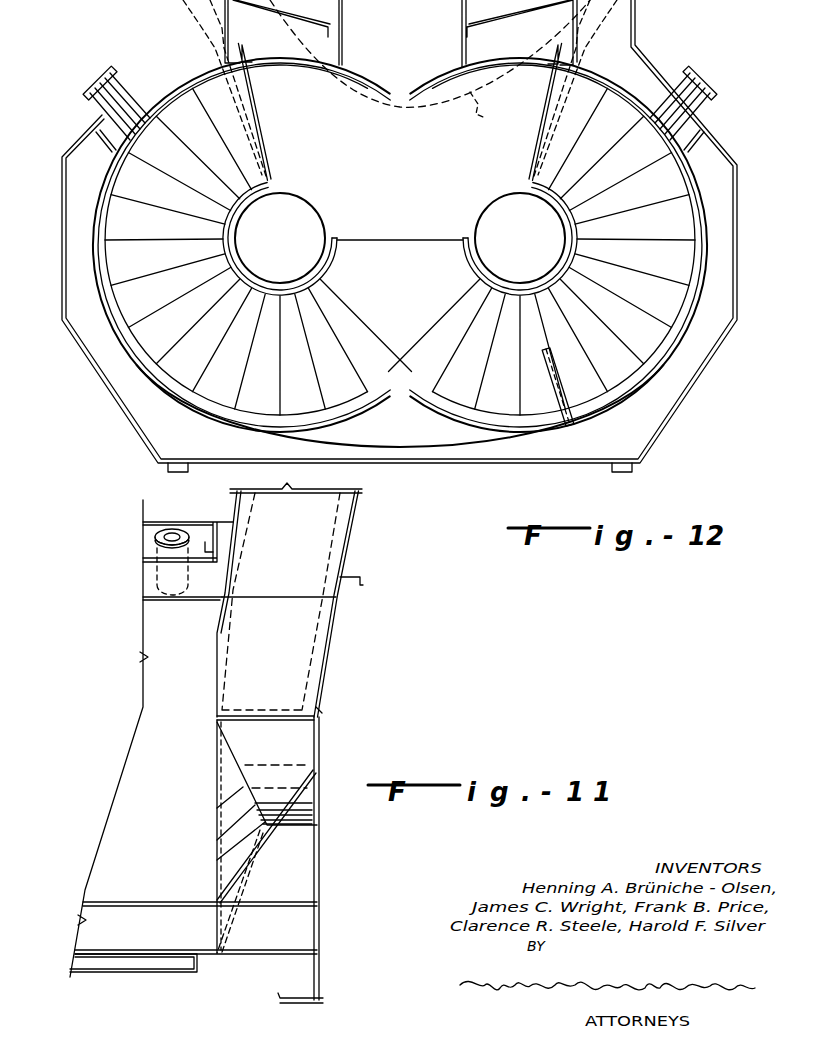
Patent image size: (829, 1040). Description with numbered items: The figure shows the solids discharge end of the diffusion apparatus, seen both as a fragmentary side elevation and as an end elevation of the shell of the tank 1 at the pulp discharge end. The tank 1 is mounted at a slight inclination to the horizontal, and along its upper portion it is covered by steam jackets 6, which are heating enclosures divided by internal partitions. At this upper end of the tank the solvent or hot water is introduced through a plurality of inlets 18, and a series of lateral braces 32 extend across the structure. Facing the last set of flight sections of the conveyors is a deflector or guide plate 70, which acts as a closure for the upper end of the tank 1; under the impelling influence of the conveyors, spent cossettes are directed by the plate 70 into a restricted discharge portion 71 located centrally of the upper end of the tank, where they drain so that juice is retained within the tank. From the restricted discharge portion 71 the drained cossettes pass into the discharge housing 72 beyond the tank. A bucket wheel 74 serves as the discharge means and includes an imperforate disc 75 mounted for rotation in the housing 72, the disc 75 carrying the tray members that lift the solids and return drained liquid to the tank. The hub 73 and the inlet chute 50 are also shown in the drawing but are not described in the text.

In FIG. 12, the tank 1 is at (632, 384).
In FIG. 12, the steam jackets 6 is at (679, 338).
In FIG. 12, the inlets 18 is at (98, 86).
In FIG. 11, the inlets 18 is at (160, 534).
In FIG. 12, the lateral braces 32 is at (737, 289).
In FIG. 12, the inlet chute 50 is at (378, 71).
In FIG. 12, the deflector or guide plate 70 is at (274, 148).
In FIG. 11, the deflector or guide plate 70 is at (227, 825).
In FIG. 12, the restricted discharge portion 71 is at (420, 181).
In FIG. 11, the discharge housing 72 is at (353, 525).
In FIG. 12, the hub 73 is at (325, 219).
In FIG. 12, the bucket wheel 74 is at (485, 118).
In FIG. 11, the bucket wheel 74 is at (300, 668).
In FIG. 12, the imperforate disc 75 is at (568, 393).